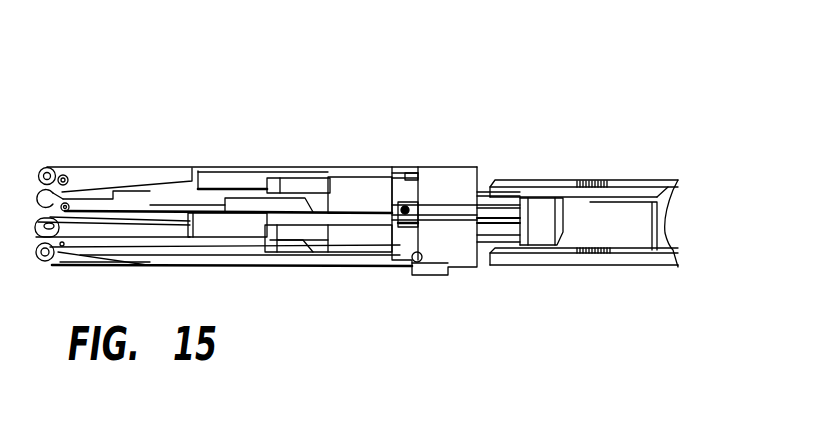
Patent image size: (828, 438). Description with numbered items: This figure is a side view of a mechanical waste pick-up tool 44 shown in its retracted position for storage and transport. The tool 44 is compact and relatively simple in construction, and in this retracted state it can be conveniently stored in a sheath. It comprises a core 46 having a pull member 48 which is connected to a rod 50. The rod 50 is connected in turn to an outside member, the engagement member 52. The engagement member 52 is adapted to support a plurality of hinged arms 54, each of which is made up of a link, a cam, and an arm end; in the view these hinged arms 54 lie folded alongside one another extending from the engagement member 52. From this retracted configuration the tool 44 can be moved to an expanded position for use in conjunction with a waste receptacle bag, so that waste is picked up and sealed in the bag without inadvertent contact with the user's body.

The waste pick-up tool 44 is at (420, 100).
The core 46 is at (358, 202).
The pull member 48 is at (543, 223).
The rod 50 is at (508, 200).
The engagement member 52 is at (448, 263).
The hinged arms 54 is at (323, 266).